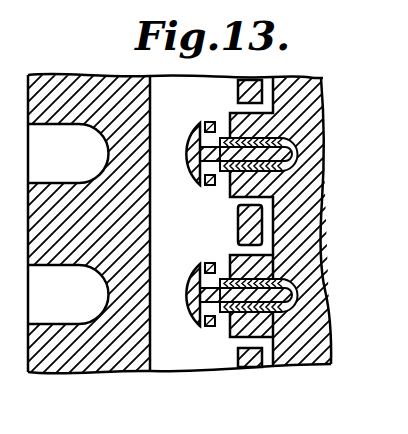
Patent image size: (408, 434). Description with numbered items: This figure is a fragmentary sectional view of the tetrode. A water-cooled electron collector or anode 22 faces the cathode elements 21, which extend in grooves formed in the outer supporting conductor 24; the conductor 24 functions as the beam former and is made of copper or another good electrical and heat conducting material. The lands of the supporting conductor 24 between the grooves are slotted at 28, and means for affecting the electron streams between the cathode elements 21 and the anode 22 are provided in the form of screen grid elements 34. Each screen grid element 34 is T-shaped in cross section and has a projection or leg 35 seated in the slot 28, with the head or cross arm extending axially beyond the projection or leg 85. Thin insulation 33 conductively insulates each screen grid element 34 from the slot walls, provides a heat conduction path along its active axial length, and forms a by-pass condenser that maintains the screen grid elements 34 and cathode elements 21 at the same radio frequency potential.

The anode 22 is at (90, 370).
The outer supporting conductor 24 is at (322, 244).
The slot 28 is at (323, 317).
The cathode element 21 is at (253, 368).
The projection or leg 85 is at (305, 291).
The screen grid element 34 is at (184, 278).
The projection or leg 35 is at (210, 260).
The insulation 33 is at (218, 318).